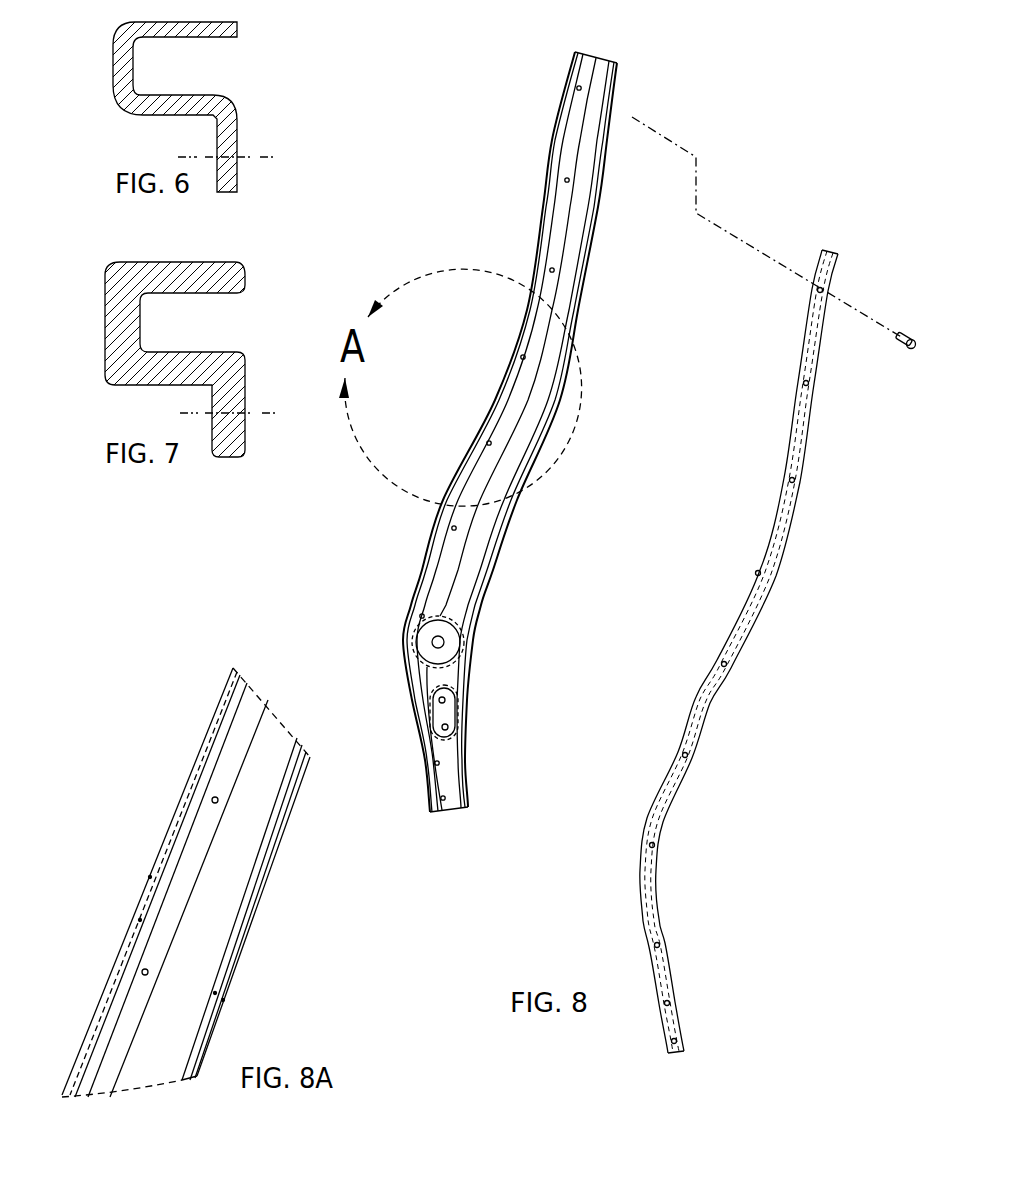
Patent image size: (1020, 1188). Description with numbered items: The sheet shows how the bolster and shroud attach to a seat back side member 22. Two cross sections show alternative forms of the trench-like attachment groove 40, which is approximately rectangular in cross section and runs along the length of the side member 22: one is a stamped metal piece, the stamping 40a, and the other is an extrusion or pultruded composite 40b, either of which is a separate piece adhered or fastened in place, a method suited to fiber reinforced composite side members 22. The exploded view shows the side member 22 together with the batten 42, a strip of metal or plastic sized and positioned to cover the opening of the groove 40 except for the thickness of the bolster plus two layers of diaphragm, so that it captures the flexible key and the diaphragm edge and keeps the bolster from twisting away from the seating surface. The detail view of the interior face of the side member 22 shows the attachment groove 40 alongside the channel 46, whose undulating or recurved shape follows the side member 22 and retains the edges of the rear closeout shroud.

In FIG. 8, the side member 22 is at (532, 395).
In FIG. 8A, the side member 22 is at (253, 778).
In FIG. 8A, the attachment groove 40 is at (130, 947).
In FIG. 6, the stamping 40a is at (266, 77).
In FIG. 7, the extrusion or pultruded composite 40b is at (268, 318).
In FIG. 8, the batten 42 is at (781, 543).
In FIG. 8A, the batten 42 is at (135, 997).
In FIG. 8A, the channel 46 is at (243, 922).